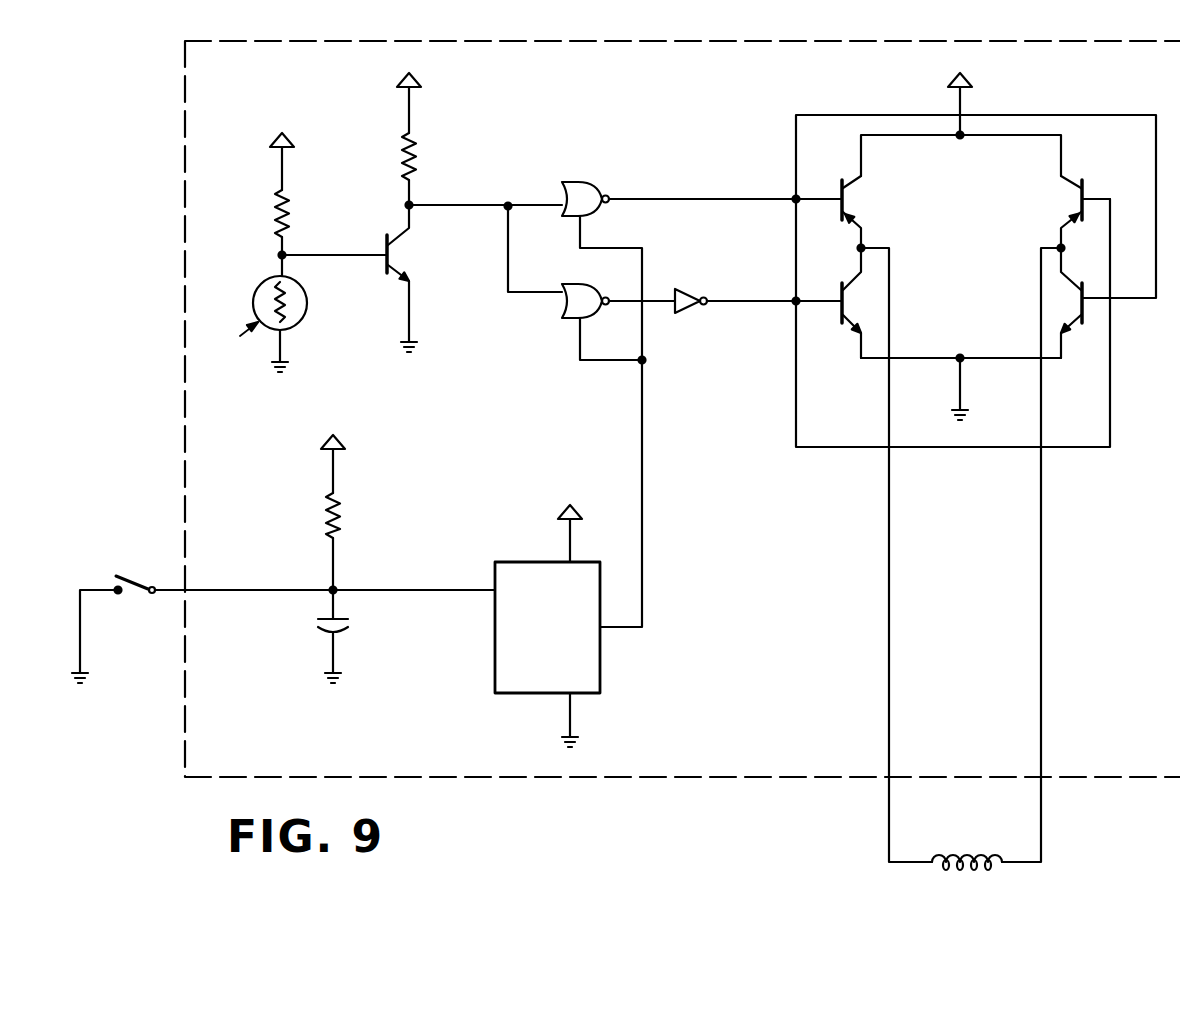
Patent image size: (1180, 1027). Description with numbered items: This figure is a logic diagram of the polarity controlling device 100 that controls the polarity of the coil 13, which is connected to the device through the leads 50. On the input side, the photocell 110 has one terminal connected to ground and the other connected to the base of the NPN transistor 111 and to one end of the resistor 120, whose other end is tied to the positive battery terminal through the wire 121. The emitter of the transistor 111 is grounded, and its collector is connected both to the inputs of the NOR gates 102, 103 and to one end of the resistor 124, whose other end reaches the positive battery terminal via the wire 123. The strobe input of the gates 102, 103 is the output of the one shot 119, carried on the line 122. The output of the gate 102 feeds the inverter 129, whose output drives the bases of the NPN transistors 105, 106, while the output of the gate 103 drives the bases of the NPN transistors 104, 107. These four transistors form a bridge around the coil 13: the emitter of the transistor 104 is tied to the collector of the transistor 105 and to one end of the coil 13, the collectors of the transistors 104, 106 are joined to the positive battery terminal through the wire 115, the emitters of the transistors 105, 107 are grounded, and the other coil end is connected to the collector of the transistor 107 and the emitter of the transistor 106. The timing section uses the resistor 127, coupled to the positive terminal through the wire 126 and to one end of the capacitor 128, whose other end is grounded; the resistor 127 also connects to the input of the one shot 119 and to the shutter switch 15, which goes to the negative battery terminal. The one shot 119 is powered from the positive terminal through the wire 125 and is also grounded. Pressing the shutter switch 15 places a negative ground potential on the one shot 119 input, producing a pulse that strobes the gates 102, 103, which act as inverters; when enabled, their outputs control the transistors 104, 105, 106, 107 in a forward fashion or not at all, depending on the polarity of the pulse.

The coil 13 is at (945, 853).
The shutter switch 15 is at (130, 577).
The leads 50 is at (893, 800).
The polarity controlling device 100 is at (450, 730).
The NOR gate 102 is at (562, 303).
The NOR gate 103 is at (578, 185).
The NPN transistor 104 is at (848, 192).
The NPN transistor 105 is at (848, 312).
The NPN transistor 106 is at (1078, 192).
The NPN transistor 107 is at (1084, 312).
The photocell 110 is at (258, 297).
The NPN transistor 111 is at (394, 250).
The wire 115 is at (963, 107).
The one shot 119 is at (590, 673).
The resistor 120 is at (278, 213).
The wire 121 is at (282, 160).
The line 122 is at (643, 412).
The wire 123 is at (407, 103).
The resistor 124 is at (415, 160).
The wire 125 is at (568, 538).
The wire 126 is at (338, 483).
The resistor 127 is at (330, 518).
The capacitor 128 is at (352, 622).
The inverter 129 is at (688, 290).